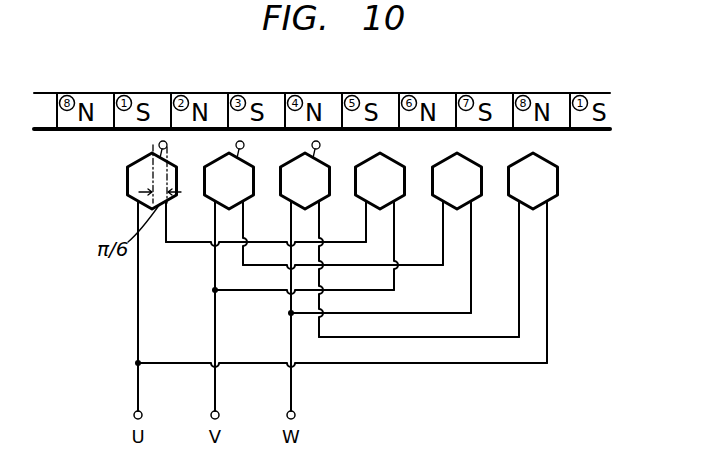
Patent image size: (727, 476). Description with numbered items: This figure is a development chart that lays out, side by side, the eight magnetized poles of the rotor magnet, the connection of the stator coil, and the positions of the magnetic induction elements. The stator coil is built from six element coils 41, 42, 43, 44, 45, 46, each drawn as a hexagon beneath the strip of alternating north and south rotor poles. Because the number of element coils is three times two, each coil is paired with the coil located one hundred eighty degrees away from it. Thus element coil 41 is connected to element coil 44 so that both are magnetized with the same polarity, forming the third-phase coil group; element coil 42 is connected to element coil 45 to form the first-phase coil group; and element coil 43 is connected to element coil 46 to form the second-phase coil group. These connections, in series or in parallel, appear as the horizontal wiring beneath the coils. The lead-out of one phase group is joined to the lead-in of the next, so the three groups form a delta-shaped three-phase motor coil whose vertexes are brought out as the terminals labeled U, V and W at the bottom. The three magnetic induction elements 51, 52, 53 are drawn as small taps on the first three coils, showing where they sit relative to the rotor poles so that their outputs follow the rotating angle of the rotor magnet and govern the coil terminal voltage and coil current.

The element coil 41 is at (140, 160).
The element coil 42 is at (216, 156).
The element coil 43 is at (300, 156).
The element coil 44 is at (376, 153).
The element coil 45 is at (452, 153).
The element coil 46 is at (528, 153).
The magnetic induction element 51 is at (236, 153).
The magnetic induction element 52 is at (312, 153).
The magnetic induction element 53 is at (158, 160).